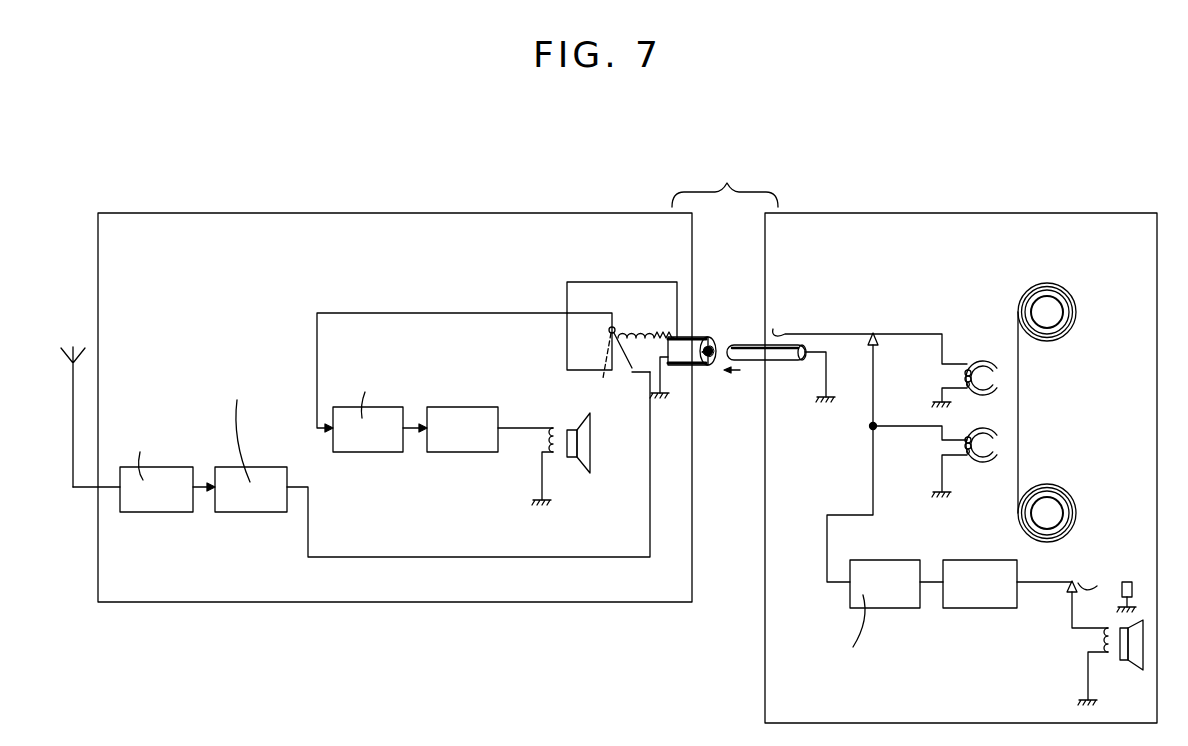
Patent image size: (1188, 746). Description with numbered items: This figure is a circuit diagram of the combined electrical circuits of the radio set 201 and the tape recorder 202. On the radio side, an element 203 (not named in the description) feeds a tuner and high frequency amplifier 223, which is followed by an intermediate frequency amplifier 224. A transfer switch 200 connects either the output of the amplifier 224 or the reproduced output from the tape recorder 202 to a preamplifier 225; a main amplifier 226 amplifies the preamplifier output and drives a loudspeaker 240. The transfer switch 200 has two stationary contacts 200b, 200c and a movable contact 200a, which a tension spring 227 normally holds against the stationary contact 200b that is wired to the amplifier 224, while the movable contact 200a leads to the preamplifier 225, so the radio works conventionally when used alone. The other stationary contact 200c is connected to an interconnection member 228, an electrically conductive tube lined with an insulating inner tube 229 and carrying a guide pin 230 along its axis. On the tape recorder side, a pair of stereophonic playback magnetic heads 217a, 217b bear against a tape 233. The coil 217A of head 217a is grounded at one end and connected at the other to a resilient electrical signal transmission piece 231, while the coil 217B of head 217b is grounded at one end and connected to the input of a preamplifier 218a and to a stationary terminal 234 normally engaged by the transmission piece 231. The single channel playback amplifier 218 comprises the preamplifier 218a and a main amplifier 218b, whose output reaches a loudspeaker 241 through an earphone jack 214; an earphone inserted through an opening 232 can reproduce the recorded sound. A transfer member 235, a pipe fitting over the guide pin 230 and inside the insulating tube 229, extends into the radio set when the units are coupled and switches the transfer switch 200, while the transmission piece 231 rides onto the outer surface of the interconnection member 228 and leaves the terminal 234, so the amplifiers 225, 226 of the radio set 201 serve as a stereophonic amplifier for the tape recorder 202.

The radio set 201 is at (450, 213).
The tape recorder 202 is at (972, 175).
The antenna 203 is at (70, 380).
The tuner and high frequency amplifier 223 is at (163, 508).
The intermediate frequency amplifier 224 is at (258, 508).
The preamplifier 225 is at (373, 452).
The main amplifier 226 is at (465, 452).
The loudspeaker 240 is at (578, 458).
The transfer switch 200 is at (603, 326).
The movable contact 200a is at (625, 372).
The stationary contact 200b is at (636, 374).
The stationary contact 200c is at (598, 371).
The tension spring 227 is at (637, 330).
The interconnection member 228 is at (700, 338).
The inner tube 229 is at (710, 340).
The guide pin 230 is at (710, 368).
The transfer member 235 is at (782, 360).
The electrical signal transmission piece 231 is at (800, 332).
The stationary terminal 234 is at (878, 338).
The coil 217A is at (967, 380).
The stereophonic playback magnetic head 217a is at (983, 360).
The coil 217B is at (967, 443).
The stereophonic playback magnetic head 217b is at (990, 465).
The tape 233 is at (1018, 422).
The single channel playback amplifier 218 is at (896, 600).
The preamplifier 218a is at (882, 567).
The main amplifier 218b is at (980, 568).
The earphone jack 214 is at (1078, 580).
The opening 232 is at (1135, 578).
The loudspeaker 241 is at (1128, 668).